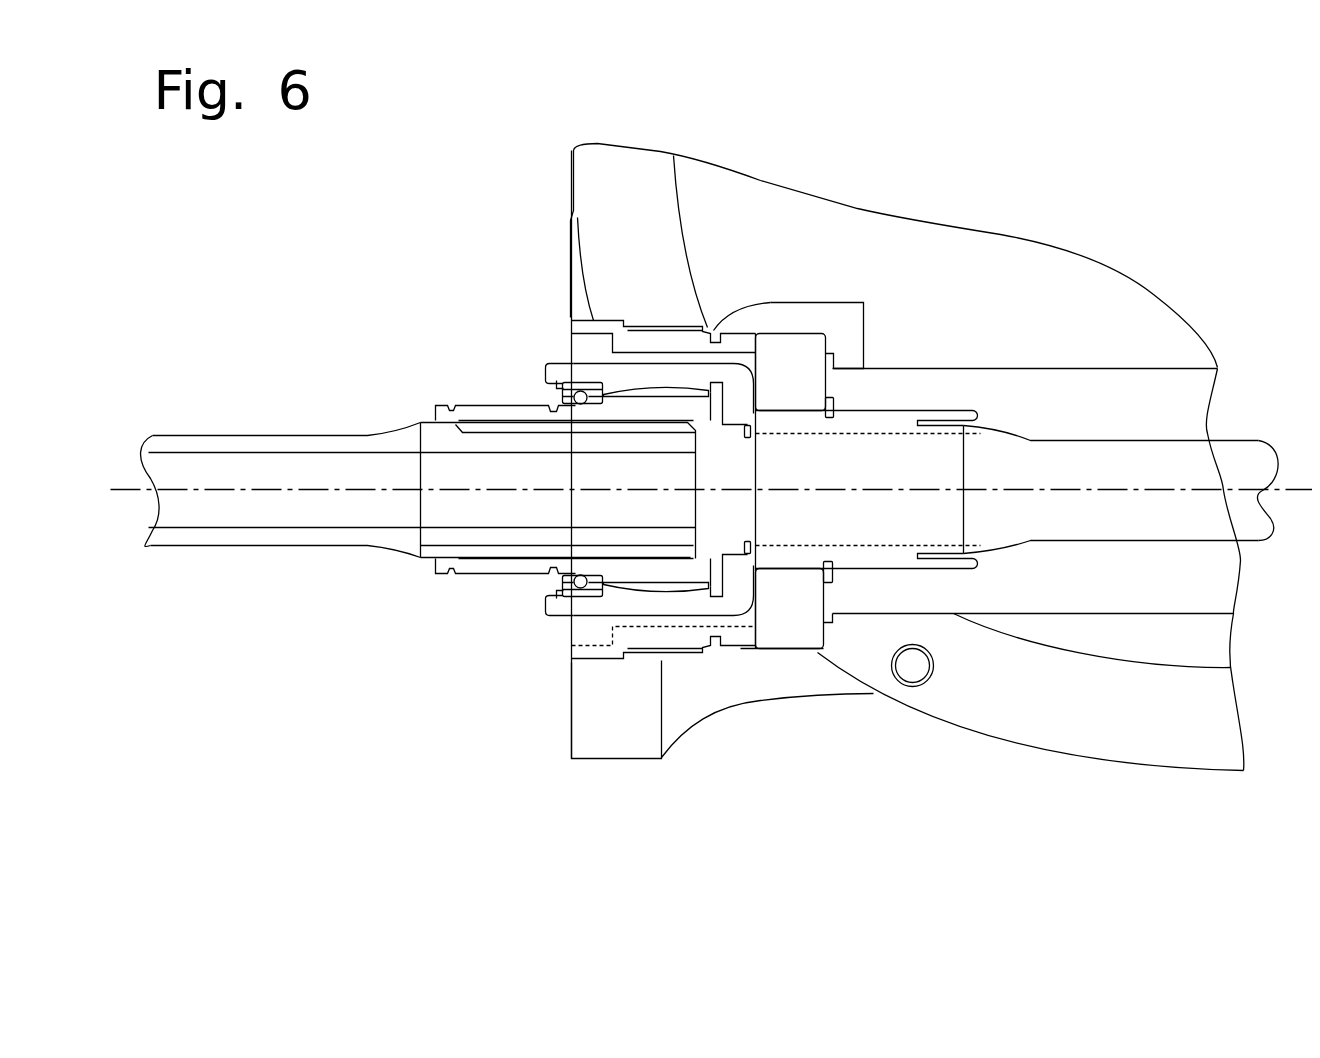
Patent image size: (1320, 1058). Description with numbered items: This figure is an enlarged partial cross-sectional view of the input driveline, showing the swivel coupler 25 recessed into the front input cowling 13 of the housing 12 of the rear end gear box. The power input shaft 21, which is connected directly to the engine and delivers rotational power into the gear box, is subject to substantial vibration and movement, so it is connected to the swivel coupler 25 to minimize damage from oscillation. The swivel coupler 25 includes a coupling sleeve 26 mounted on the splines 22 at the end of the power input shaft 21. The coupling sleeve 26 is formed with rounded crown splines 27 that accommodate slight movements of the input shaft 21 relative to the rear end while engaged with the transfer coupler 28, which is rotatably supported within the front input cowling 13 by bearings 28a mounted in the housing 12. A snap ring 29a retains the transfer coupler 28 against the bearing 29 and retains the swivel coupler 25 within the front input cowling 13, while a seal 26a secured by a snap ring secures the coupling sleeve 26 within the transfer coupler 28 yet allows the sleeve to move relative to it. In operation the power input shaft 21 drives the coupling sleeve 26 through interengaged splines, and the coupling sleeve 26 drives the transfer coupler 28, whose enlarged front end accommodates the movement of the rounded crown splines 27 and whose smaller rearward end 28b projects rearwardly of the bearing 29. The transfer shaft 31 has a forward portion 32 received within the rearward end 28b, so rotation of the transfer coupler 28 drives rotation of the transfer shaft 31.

The housing 12 is at (640, 168).
The front input cowling 13 is at (627, 737).
The power input shaft 21 is at (224, 465).
The splines 22 is at (433, 553).
The swivel coupler 25 is at (538, 270).
The coupling sleeve 26 is at (468, 412).
The seal 26a is at (563, 587).
The rounded crown splines 27 is at (657, 595).
The transfer coupler 28 is at (602, 612).
The bearings 28a is at (598, 378).
The rearward end 28b is at (773, 563).
The bearing 29 is at (792, 347).
The snap ring 29a is at (840, 400).
The transfer shaft 31 is at (1118, 453).
The forward portion 32 is at (930, 525).